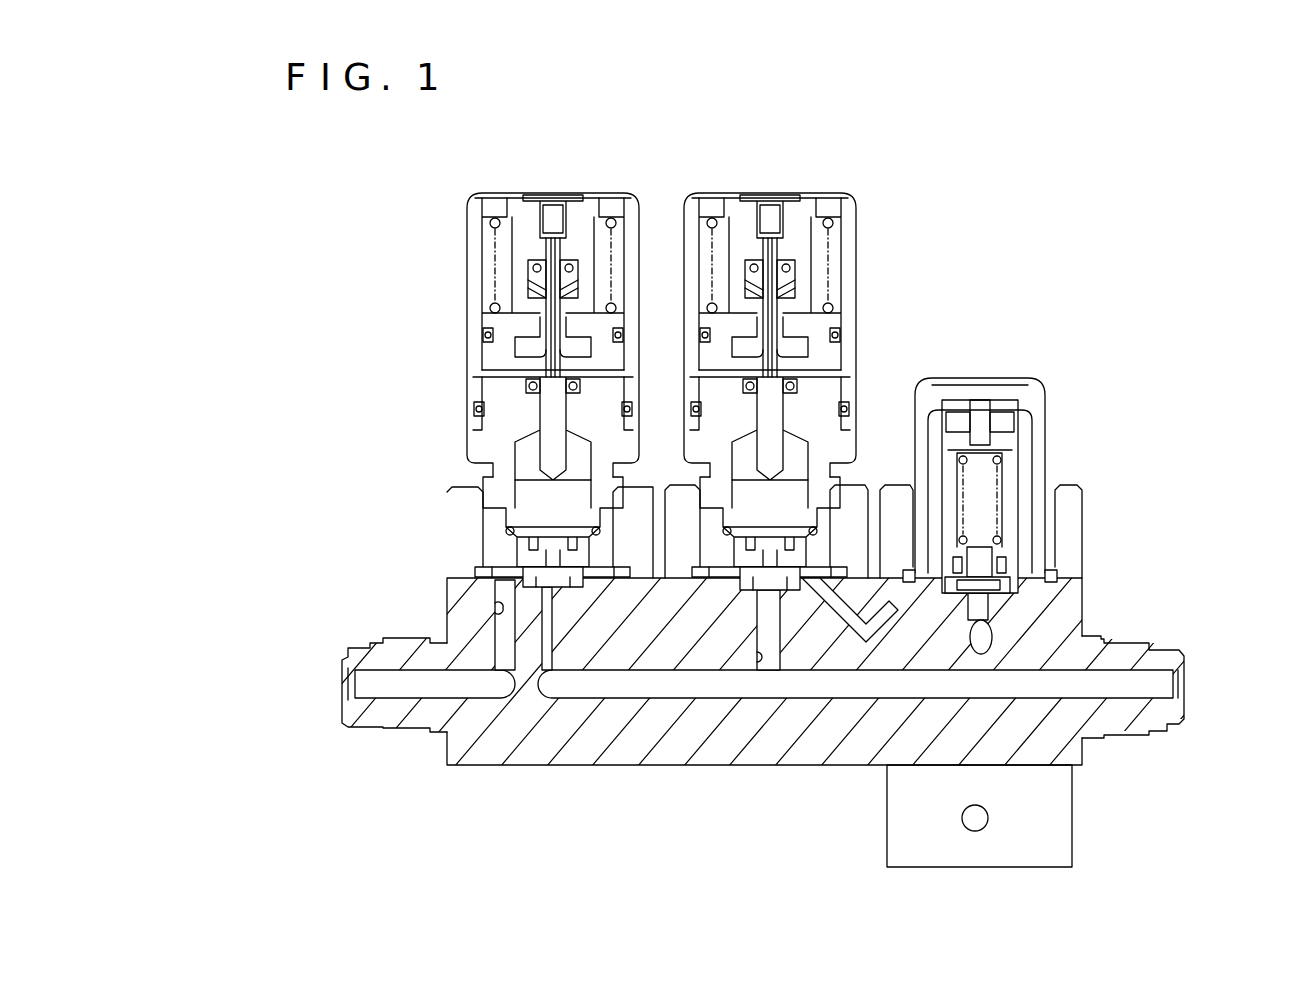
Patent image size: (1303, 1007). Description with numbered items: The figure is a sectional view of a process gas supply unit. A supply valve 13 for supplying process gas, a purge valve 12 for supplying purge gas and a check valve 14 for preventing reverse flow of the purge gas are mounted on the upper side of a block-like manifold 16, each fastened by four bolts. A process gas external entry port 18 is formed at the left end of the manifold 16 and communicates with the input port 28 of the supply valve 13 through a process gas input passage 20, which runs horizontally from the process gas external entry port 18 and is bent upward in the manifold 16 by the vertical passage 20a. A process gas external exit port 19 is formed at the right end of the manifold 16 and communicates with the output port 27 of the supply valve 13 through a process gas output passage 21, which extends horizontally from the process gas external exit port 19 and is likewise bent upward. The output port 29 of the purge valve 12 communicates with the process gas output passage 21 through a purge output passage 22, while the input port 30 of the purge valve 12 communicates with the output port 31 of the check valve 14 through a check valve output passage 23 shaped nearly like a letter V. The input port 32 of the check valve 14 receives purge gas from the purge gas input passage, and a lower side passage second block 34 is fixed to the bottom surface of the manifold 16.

The purge valve 12 is at (756, 478).
The supply valve 13 is at (508, 334).
The check valve 14 is at (980, 549).
The manifold 16 is at (606, 766).
The process gas external entry port 18 is at (345, 688).
The process gas external exit port 19 is at (1187, 678).
The process gas input passage 20 is at (402, 737).
The vertical passage 20a is at (498, 606).
The process gas output passage 21 is at (820, 690).
The purge output passage 22 is at (760, 665).
The check valve output passage 23 is at (862, 648).
The output port of the supply valve 27 is at (546, 702).
The input port of the supply valve 28 is at (500, 563).
The output port of the purge valve 29 is at (763, 588).
The input port of the purge valve 30 is at (813, 590).
The output port of the check valve 31 is at (925, 588).
The input port of the check valve 32 is at (990, 607).
The lower side passage second block 34 is at (1055, 825).